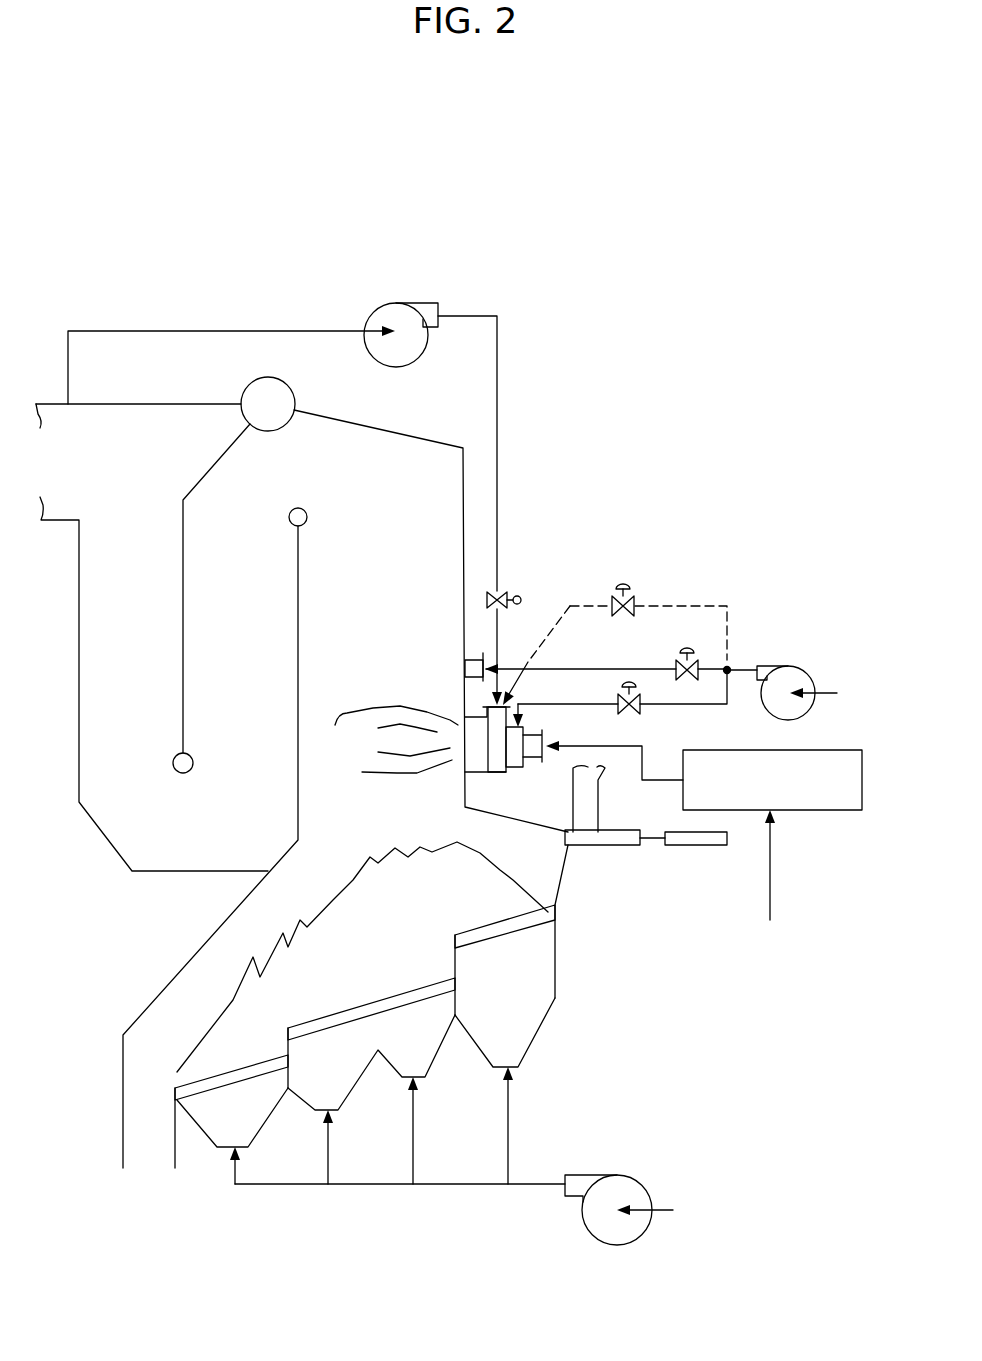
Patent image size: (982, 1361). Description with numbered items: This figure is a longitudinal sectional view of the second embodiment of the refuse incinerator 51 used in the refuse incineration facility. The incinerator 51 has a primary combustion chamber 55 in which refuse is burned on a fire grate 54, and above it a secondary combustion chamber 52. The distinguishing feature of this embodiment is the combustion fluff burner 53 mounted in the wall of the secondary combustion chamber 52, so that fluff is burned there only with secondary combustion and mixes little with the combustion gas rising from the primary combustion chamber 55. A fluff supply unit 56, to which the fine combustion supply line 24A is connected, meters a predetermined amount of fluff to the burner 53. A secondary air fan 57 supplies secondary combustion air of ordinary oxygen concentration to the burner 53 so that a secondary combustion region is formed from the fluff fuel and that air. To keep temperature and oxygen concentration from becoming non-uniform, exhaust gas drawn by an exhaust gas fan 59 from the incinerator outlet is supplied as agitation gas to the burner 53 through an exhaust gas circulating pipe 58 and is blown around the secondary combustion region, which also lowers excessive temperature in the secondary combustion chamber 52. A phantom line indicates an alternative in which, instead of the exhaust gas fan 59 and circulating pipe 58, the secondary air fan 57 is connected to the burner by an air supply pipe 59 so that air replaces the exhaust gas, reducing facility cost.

The refuse incinerator 51 is at (443, 428).
The secondary combustion chamber 52 is at (396, 698).
The combustion fluff burner 53 is at (490, 752).
The fire grate 54 is at (270, 1063).
The primary combustion chamber 55 is at (362, 957).
The fluff supply unit 56 is at (813, 811).
The secondary air fan 57 is at (405, 308).
The exhaust gas circulating pipe 58 is at (497, 400).
The exhaust gas fan 59 is at (688, 604).
The fine combustion supply line 24A is at (768, 905).